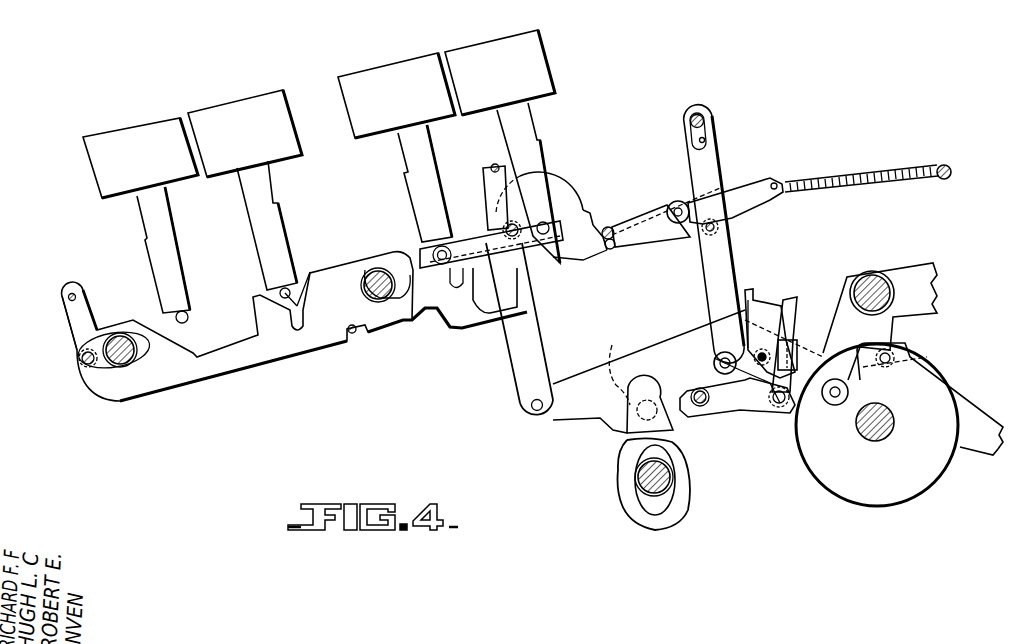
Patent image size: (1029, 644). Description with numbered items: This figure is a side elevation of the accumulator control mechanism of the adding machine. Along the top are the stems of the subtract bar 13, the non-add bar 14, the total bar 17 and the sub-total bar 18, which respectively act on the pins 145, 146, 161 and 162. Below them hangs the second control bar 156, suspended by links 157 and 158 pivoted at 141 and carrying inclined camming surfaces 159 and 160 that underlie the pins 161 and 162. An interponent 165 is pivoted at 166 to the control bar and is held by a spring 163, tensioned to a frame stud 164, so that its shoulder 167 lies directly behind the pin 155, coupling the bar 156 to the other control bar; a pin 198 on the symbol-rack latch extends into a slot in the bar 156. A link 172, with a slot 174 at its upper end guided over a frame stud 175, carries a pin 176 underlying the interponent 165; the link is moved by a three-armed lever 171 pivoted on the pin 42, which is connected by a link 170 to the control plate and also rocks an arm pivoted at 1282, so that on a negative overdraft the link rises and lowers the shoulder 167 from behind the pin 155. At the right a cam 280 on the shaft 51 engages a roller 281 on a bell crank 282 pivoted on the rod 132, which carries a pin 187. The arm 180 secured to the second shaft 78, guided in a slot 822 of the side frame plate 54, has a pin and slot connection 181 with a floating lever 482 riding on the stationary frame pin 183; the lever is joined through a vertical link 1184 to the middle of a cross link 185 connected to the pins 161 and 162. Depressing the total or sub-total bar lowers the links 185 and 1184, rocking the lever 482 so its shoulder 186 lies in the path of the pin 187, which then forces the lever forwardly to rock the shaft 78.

The subtract bar 13 is at (149, 120).
The non-add bar 14 is at (240, 104).
The total bar 17 is at (514, 32).
The sub-total bar 18 is at (414, 60).
The pivot 141 is at (77, 288).
The pin 145 is at (187, 316).
The pin 146 is at (294, 290).
The second control bar 156 is at (302, 350).
The link 157 is at (90, 306).
The pin 198 is at (358, 334).
The inclined camming surface 159 is at (412, 320).
The pin 161 is at (413, 253).
The inclined camming surface 160 is at (573, 258).
The link 158 is at (496, 190).
The pin 162 is at (571, 206).
The pin 155 is at (612, 225).
The shoulder 167 is at (610, 252).
The pivot 166 is at (677, 201).
The interponent 165 is at (729, 190).
The spring 163 is at (835, 176).
The frame stud 164 is at (949, 168).
The link 172 is at (722, 258).
The slot 174 is at (708, 140).
The frame stud 175 is at (710, 116).
The pin 176 is at (706, 230).
The pivot 1282 is at (714, 363).
The pivot pin 42 is at (749, 304).
The three-armed lever 171 is at (796, 292).
The roller 281 is at (822, 322).
The bell crank 282 is at (855, 280).
The rod 132 is at (875, 278).
The pin 187 is at (891, 355).
The shoulder 186 is at (915, 358).
The cam 280 is at (892, 494).
The shaft 51 is at (893, 426).
The link 170 is at (753, 408).
The stationary frame pin 183 is at (704, 402).
The cross link 185 is at (530, 302).
The vertical link 1184 is at (512, 380).
The floating lever 482 is at (598, 366).
The pin and slot connection 181 is at (620, 347).
The arm 180 is at (672, 422).
The side frame plate 54 is at (623, 512).
The vertically extending slot 822 is at (659, 512).
The second shaft 78 is at (670, 480).